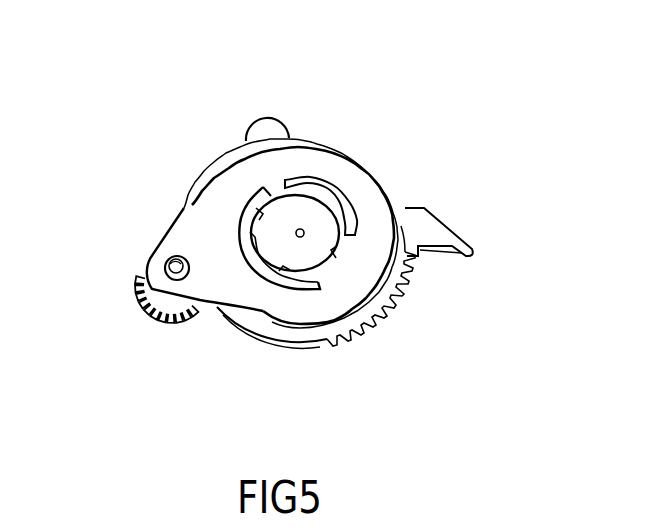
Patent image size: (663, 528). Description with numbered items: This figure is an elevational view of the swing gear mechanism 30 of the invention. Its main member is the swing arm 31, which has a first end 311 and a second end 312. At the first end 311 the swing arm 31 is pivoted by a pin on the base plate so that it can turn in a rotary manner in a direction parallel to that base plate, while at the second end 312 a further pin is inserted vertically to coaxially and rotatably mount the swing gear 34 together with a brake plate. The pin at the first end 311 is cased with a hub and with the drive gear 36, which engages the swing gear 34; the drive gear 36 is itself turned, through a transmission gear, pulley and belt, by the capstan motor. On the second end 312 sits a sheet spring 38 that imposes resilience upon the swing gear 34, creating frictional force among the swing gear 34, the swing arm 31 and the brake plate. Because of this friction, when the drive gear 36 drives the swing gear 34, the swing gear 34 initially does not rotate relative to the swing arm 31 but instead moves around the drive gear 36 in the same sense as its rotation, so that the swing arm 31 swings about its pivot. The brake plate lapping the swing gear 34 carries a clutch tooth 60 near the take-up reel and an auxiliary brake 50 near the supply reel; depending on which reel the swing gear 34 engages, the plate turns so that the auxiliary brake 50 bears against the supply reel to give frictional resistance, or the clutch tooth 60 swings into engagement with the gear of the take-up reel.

The swing gear mechanism 30 is at (225, 133).
The swing arm 31 is at (240, 185).
The first end 311 is at (198, 233).
The second end 312 is at (368, 212).
The swing gear 34 is at (309, 326).
The drive gear 36 is at (150, 308).
The sheet spring 38 is at (307, 222).
The auxiliary brake 50 is at (272, 115).
The clutch tooth 60 is at (432, 230).